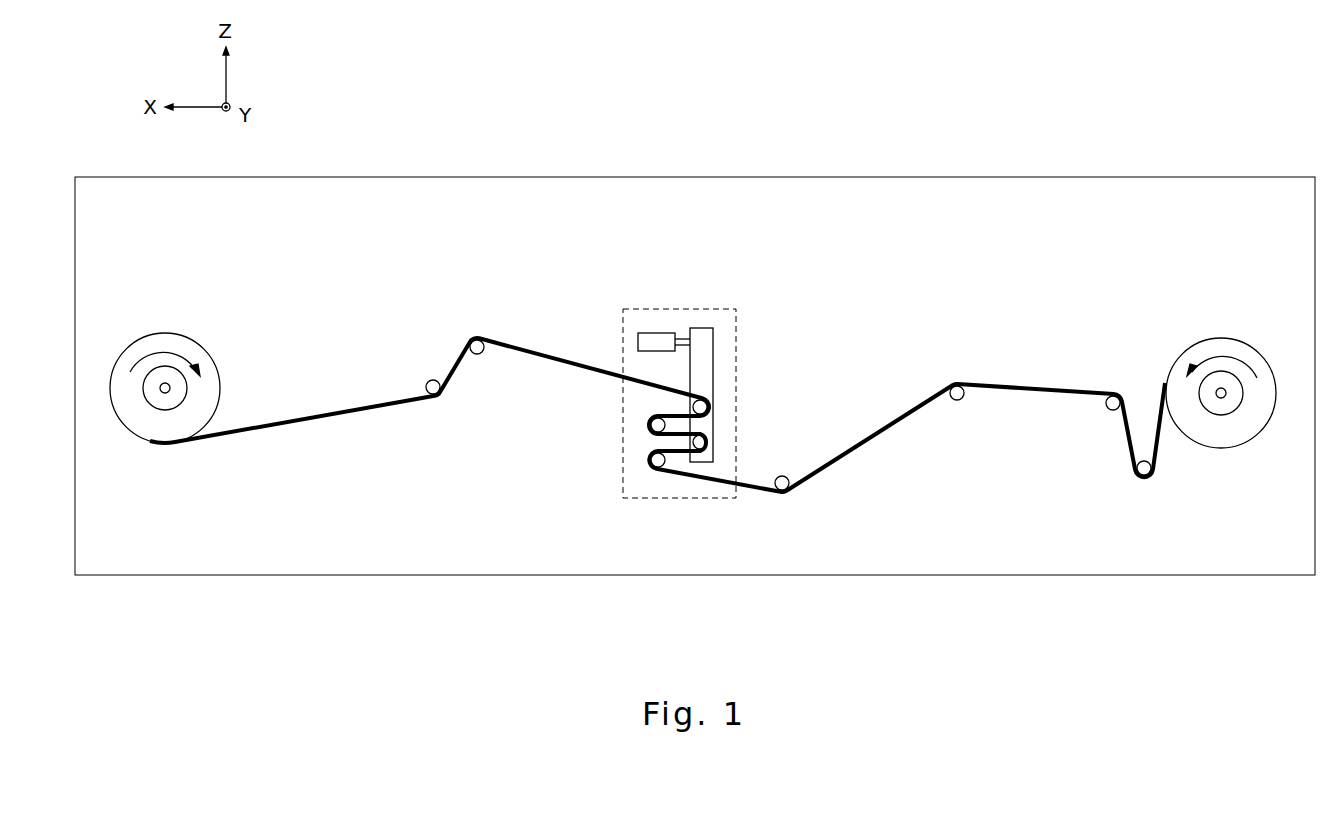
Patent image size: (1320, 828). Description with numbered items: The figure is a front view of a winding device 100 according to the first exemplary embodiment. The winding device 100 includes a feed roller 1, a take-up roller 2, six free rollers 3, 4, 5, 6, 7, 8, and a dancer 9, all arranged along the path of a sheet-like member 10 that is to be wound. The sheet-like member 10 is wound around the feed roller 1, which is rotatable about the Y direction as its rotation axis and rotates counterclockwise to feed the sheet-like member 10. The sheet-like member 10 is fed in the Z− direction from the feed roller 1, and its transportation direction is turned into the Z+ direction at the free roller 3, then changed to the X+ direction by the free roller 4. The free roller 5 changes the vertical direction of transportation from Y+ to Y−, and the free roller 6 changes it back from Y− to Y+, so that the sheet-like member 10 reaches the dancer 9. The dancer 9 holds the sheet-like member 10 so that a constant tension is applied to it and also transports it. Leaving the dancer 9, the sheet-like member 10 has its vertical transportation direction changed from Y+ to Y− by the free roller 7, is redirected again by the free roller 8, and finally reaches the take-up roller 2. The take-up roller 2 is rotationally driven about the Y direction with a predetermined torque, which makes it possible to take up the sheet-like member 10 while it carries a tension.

The winding device 100 is at (696, 114).
The feed roller 1 is at (1235, 340).
The take-up roller 2 is at (178, 334).
The free roller 3 is at (1151, 477).
The free roller 4 is at (1107, 411).
The free roller 5 is at (960, 402).
The free roller 6 is at (786, 474).
The free roller 7 is at (482, 355).
The free roller 8 is at (428, 381).
The dancer 9 is at (688, 306).
The sheet-like member 10 is at (1036, 388).